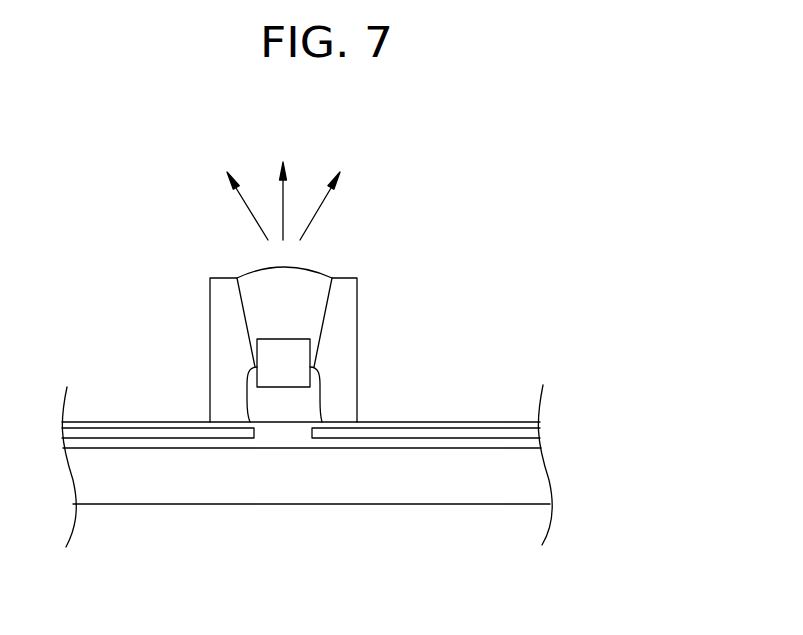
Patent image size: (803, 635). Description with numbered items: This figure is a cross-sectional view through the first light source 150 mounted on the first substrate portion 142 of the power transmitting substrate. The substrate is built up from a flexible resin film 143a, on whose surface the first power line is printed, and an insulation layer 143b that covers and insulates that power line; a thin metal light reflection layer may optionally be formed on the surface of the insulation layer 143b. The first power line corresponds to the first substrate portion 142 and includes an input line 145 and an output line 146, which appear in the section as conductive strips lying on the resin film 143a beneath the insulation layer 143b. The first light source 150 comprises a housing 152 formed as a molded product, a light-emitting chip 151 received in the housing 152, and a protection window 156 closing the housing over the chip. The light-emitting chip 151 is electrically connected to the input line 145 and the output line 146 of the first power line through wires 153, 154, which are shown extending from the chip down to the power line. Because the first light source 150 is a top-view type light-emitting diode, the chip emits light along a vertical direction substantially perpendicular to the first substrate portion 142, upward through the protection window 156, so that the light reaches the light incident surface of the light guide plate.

The first substrate portion 142 is at (461, 558).
The flexible resin film 143a is at (285, 478).
The insulation layer 143b is at (370, 443).
The input line 145 is at (170, 433).
The output line 146 is at (447, 432).
The first light source 150 is at (137, 235).
The light-emitting chip 151 is at (275, 352).
The housing 152 is at (235, 372).
The wire 153 is at (246, 396).
The wire 154 is at (320, 392).
The protection window 156 is at (250, 280).